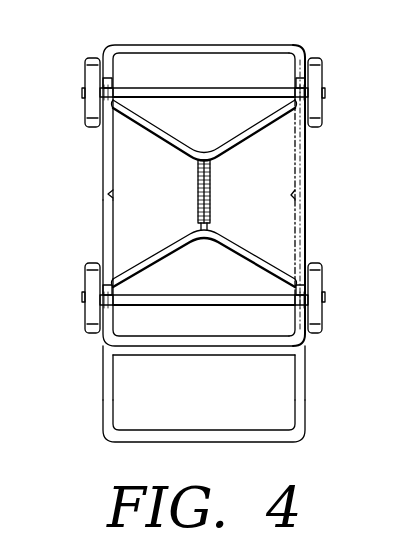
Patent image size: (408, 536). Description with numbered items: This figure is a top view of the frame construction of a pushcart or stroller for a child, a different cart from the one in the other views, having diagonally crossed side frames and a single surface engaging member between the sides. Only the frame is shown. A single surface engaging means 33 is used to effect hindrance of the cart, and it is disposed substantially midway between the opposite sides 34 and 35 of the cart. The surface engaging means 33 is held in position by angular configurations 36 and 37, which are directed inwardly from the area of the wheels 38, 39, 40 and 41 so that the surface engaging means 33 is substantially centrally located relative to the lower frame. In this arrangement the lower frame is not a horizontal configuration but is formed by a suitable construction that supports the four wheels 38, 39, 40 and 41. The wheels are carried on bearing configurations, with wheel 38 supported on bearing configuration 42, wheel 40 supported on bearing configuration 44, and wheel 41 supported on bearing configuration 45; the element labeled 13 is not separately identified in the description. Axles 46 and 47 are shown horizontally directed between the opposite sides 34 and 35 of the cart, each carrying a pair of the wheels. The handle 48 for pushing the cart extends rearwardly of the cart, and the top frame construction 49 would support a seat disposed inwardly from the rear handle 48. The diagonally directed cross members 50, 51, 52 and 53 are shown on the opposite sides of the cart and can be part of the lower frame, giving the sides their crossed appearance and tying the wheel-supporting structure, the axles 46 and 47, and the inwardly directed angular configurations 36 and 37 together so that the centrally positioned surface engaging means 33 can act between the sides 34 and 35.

The upper right clamp bracket 13 is at (307, 55).
The surface engaging means 33 is at (197, 190).
The opposite side 34 is at (205, 243).
The opposite side 35 is at (318, 178).
The angular configuration 36 is at (157, 130).
The angular configuration 37 is at (238, 236).
The wheel 38 is at (85, 75).
The wheel 39 is at (323, 70).
The wheel 40 is at (85, 318).
The wheel 41 is at (323, 312).
The bearing configuration 42 is at (108, 78).
The bearing configuration 44 is at (323, 268).
The bearing configuration 45 is at (108, 290).
The axle 46 is at (237, 88).
The axle 47 is at (237, 295).
The handle 48 is at (238, 432).
The top frame construction 49 is at (235, 350).
The diagonally directed cross member 50 is at (102, 140).
The diagonally directed cross member 51 is at (102, 220).
The diagonally directed cross member 52 is at (308, 140).
The diagonally directed cross member 53 is at (308, 215).